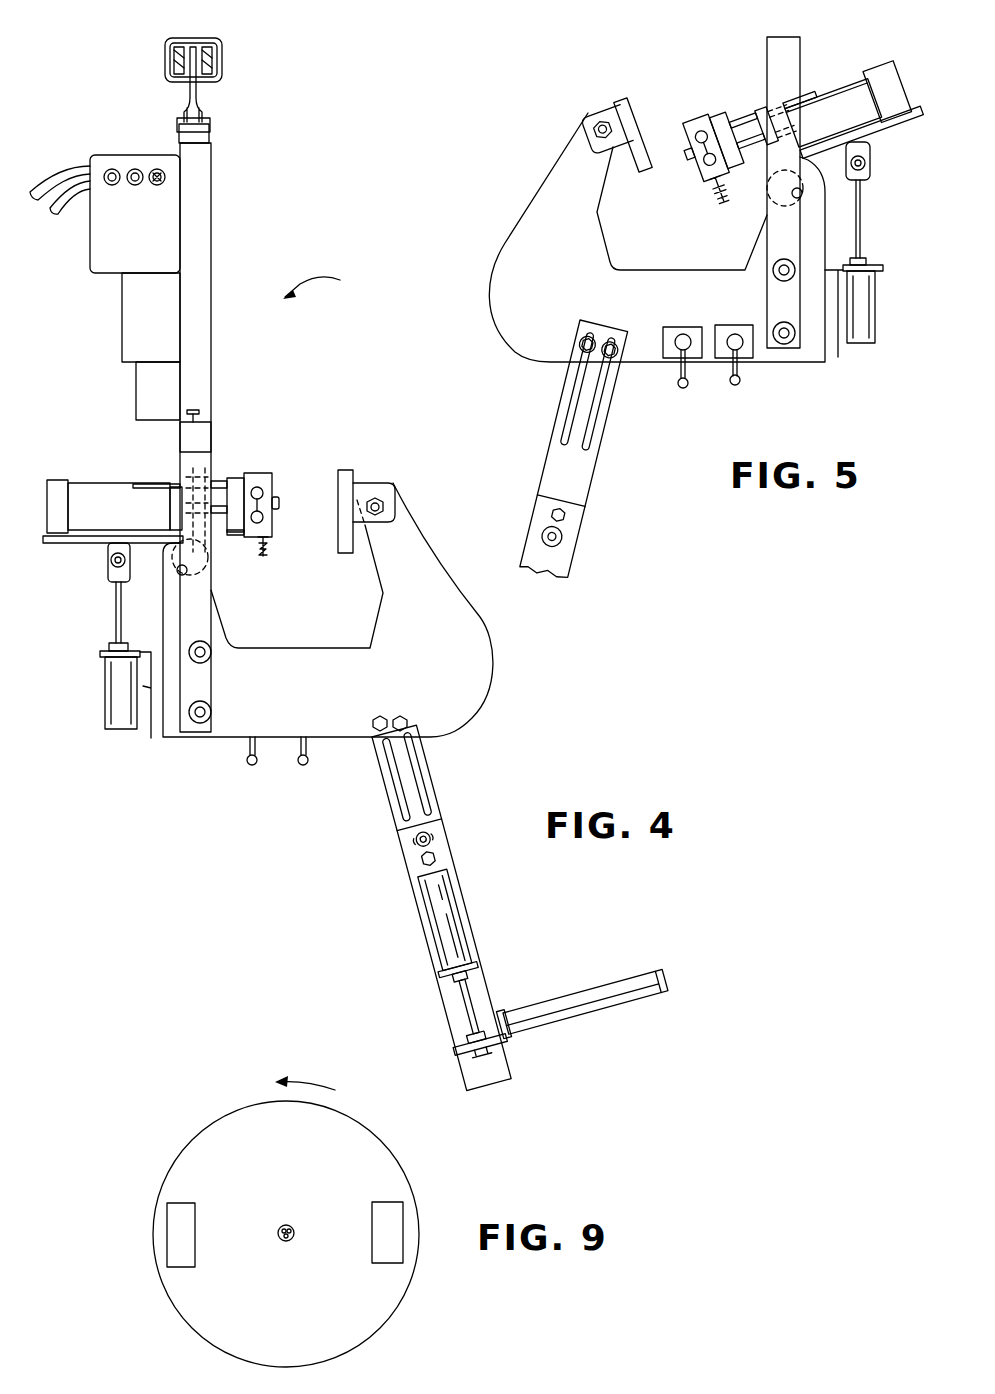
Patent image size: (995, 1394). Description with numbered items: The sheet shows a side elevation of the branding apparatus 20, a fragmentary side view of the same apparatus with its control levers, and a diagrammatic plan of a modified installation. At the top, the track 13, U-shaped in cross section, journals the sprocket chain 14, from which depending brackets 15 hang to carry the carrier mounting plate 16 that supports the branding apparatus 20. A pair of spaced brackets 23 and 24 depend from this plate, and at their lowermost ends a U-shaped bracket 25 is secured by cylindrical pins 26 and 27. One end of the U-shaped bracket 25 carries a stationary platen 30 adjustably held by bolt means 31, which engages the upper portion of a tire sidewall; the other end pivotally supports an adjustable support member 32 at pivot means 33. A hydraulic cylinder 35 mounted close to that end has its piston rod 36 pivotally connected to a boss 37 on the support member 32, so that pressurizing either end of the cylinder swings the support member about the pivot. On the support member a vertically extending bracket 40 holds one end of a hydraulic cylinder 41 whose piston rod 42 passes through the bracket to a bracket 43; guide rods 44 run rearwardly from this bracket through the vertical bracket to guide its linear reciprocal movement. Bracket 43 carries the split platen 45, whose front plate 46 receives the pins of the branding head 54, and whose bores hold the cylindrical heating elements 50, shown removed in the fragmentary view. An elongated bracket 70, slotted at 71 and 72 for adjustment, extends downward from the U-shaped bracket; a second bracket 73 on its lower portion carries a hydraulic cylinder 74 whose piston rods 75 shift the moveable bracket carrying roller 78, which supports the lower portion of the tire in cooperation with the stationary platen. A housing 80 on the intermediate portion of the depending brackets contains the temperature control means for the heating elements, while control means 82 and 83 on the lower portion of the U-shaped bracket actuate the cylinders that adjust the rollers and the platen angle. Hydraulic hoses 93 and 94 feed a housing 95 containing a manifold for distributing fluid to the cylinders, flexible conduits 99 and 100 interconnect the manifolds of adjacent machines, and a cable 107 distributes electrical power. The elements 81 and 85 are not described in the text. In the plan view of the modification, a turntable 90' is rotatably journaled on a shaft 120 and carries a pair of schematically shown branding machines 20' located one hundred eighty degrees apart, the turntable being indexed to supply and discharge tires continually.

In FIG. 4, the track 13 is at (214, 40).
In FIG. 4, the sprocket chain 14 is at (190, 45).
In FIG. 4, the depending brackets 15 is at (200, 96).
In FIG. 4, the carrier mounting plate 16 is at (211, 141).
In FIG. 4, the branding apparatus 20 is at (327, 282).
In FIG. 4, the bracket 23 is at (205, 273).
In FIG. 5, the bracket 24 is at (800, 52).
In FIG. 4, the U-shaped bracket 25 is at (455, 673).
In FIG. 5, the U-shaped bracket 25 is at (563, 281).
In FIG. 4, the cylindrical pin 26 is at (210, 656).
In FIG. 5, the cylindrical pin 26 is at (784, 270).
In FIG. 4, the cylindrical pin 27 is at (210, 712).
In FIG. 5, the cylindrical pin 27 is at (784, 333).
In FIG. 4, the stationary platen 30 is at (346, 472).
In FIG. 5, the stationary platen 30 is at (624, 100).
In FIG. 4, the bolt means 31 is at (385, 506).
In FIG. 5, the bolt means 31 is at (596, 126).
In FIG. 4, the adjustable support member 32 is at (43, 540).
In FIG. 5, the adjustable support member 32 is at (906, 125).
In FIG. 4, the pivot means 33 is at (180, 576).
In FIG. 5, the pivot means 33 is at (782, 208).
In FIG. 4, the hydraulic cylinder 35 is at (120, 730).
In FIG. 5, the hydraulic cylinder 35 is at (876, 312).
In FIG. 4, the piston rod 36 is at (116, 622).
In FIG. 5, the piston rod 36 is at (862, 232).
In FIG. 4, the boss 37 is at (108, 556).
In FIG. 5, the boss 37 is at (868, 160).
In FIG. 4, the vertically extending bracket 40 is at (188, 470).
In FIG. 4, the hydraulic cylinder 41 is at (95, 492).
In FIG. 5, the hydraulic cylinder 41 is at (870, 92).
In FIG. 4, the piston rod 42 is at (215, 510).
In FIG. 5, the piston rod 42 is at (745, 118).
In FIG. 4, the bracket 43 is at (238, 536).
In FIG. 5, the bracket 43 is at (720, 122).
In FIG. 4, the guide rods 44 is at (226, 478).
In FIG. 5, the guide rods 44 is at (760, 105).
In FIG. 4, the platen 45 is at (286, 480).
In FIG. 5, the platen 45 is at (672, 118).
In FIG. 4, the front plate 46 is at (272, 527).
In FIG. 5, the front plate 46 is at (706, 180).
In FIG. 5, the heating elements 50 is at (698, 138).
In FIG. 4, the branding head 54 is at (281, 500).
In FIG. 5, the branding head 54 is at (690, 152).
In FIG. 4, the elongated bracket 70 is at (432, 812).
In FIG. 5, the elongated bracket 70 is at (580, 492).
In FIG. 4, the slot 71 is at (421, 789).
In FIG. 5, the slot 71 is at (572, 424).
In FIG. 4, the slot 72 is at (397, 797).
In FIG. 5, the slot 72 is at (590, 438).
In FIG. 4, the second bracket 73 is at (474, 946).
In FIG. 4, the hydraulic cylinder 74 is at (436, 922).
In FIG. 4, the piston rods 75 is at (470, 996).
In FIG. 4, the roller 78 is at (612, 978).
In FIG. 4, the housing 80 is at (166, 333).
In FIG. 4, the box 81 is at (174, 405).
In FIG. 4, the control means 82 is at (303, 766).
In FIG. 5, the control means 82 is at (686, 388).
In FIG. 4, the control means 83 is at (250, 765).
In FIG. 5, the control means 83 is at (740, 380).
In FIG. 4, the block 85 is at (205, 434).
In FIG. 4, the hydraulic hose 93 is at (60, 212).
In FIG. 4, the hydraulic hose 94 is at (47, 188).
In FIG. 4, the housing 95 is at (152, 235).
In FIG. 4, the flexible conduit 99 is at (112, 168).
In FIG. 4, the flexible conduit 100 is at (135, 168).
In FIG. 4, the cable 107 is at (166, 177).
In FIG. 9, the shaft 120 is at (290, 1225).
In FIG. 9, the branding machines 20' is at (285, 1218).
In FIG. 9, the turntable 90' is at (302, 1234).